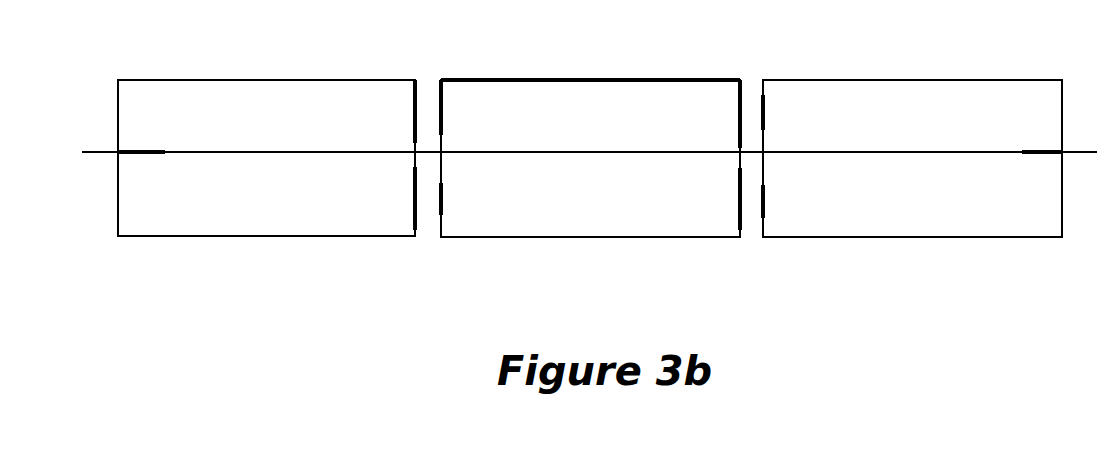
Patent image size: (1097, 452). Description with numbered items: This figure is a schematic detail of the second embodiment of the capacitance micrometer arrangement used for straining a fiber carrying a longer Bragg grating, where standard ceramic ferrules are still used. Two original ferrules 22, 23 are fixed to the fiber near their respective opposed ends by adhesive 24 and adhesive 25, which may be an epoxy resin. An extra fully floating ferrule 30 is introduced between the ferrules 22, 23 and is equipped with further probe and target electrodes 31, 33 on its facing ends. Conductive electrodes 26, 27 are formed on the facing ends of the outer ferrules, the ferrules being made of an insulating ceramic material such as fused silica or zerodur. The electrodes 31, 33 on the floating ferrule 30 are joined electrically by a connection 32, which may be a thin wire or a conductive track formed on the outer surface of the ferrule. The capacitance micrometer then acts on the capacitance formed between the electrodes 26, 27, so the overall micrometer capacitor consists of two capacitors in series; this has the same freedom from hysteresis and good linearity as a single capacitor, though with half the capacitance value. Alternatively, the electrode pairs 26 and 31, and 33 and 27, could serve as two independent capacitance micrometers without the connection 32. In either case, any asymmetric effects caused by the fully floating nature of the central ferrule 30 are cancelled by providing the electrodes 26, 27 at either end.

The ferrule 22 is at (227, 78).
The ferrule 23 is at (905, 80).
The adhesive 24 is at (140, 153).
The adhesive 25 is at (1035, 153).
The conductive electrode 26 is at (413, 110).
The conductive electrode 27 is at (765, 113).
The fully floating ferrule 30 is at (600, 237).
The electrode 31 is at (445, 110).
The connection 32 is at (578, 78).
The electrode 33 is at (738, 113).